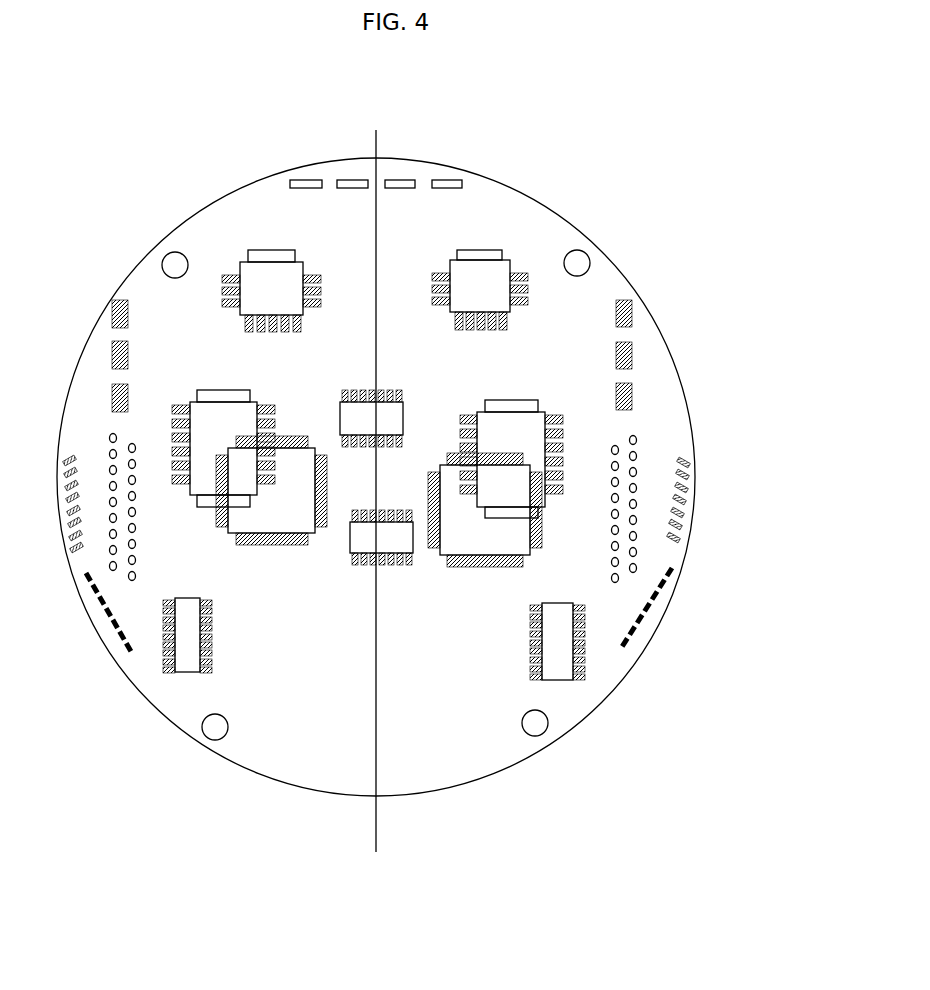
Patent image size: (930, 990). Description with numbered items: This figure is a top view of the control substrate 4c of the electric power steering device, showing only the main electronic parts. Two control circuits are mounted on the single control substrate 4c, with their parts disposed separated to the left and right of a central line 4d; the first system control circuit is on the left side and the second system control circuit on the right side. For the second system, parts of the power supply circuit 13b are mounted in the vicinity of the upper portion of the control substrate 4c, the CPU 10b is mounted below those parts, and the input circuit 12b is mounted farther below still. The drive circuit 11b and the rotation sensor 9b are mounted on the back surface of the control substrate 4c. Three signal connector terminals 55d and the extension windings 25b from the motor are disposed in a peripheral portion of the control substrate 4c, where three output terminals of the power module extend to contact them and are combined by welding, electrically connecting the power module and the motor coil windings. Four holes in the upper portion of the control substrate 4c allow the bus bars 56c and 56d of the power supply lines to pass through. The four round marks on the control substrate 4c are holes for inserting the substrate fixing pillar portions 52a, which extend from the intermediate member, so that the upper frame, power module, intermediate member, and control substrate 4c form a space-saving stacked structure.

The control substrate 4c is at (522, 192).
The central line 4d is at (376, 806).
The bus bar 56c is at (395, 180).
The bus bar 56d is at (450, 180).
The power supply circuit 13b is at (487, 250).
The extension windings 25b is at (632, 316).
The drive circuit 11b is at (537, 440).
The CPU 10b is at (505, 540).
The rotation sensor 9b is at (400, 548).
The input circuit 12b is at (582, 628).
The signal connector terminals 55d is at (632, 632).
The substrate fixing pillar portions 52a is at (205, 736).